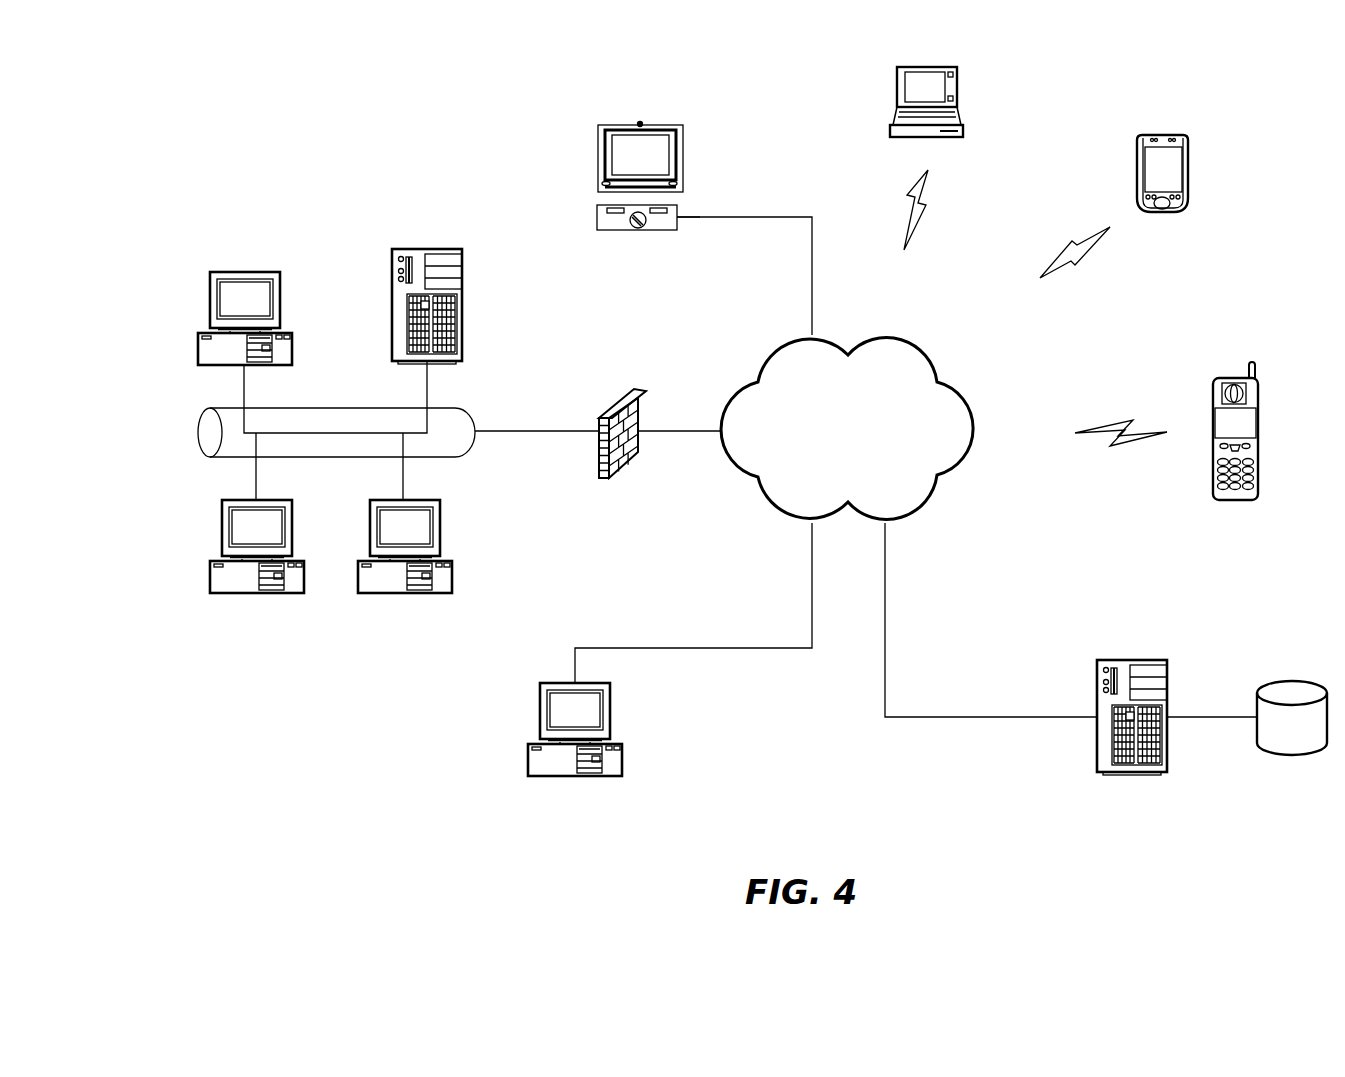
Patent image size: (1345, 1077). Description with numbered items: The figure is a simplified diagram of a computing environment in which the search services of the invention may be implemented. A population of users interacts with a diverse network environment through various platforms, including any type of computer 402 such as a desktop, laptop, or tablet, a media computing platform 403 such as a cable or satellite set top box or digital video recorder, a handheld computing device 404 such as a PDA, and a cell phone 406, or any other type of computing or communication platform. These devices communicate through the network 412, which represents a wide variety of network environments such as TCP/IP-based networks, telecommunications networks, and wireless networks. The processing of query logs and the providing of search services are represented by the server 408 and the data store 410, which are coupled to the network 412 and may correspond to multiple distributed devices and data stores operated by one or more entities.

The computer 402 is at (211, 305).
The media computing platform 403 is at (597, 216).
The handheld computing device 404 is at (1145, 136).
The cell phone 406 is at (1218, 384).
The server 408 is at (1108, 659).
The data store 410 is at (1290, 682).
The network 412 is at (775, 353).